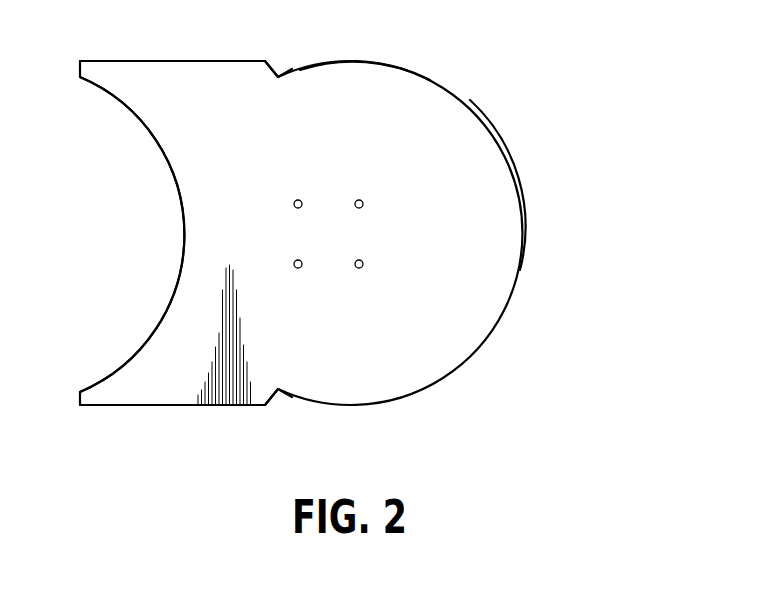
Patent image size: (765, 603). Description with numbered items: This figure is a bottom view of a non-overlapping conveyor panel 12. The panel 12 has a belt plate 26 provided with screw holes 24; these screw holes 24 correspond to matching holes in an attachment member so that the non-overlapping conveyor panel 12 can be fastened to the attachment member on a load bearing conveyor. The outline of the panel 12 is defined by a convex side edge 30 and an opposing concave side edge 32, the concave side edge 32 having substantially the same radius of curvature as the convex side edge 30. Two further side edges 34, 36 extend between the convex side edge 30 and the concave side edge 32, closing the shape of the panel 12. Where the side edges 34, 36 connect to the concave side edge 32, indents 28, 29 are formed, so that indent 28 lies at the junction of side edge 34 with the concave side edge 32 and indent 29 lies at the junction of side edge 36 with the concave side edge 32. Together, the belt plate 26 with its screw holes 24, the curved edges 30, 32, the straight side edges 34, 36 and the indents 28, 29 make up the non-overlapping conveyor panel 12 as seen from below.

The non-overlapping conveyor panel 12 is at (517, 346).
The screw holes 24 is at (363, 204).
The belt plate 26 is at (387, 63).
The indent 28 is at (282, 396).
The indent 29 is at (272, 68).
The convex side edge 30 is at (178, 186).
The concave side edge 32 is at (502, 148).
The side edge 34 is at (180, 405).
The side edge 36 is at (208, 61).